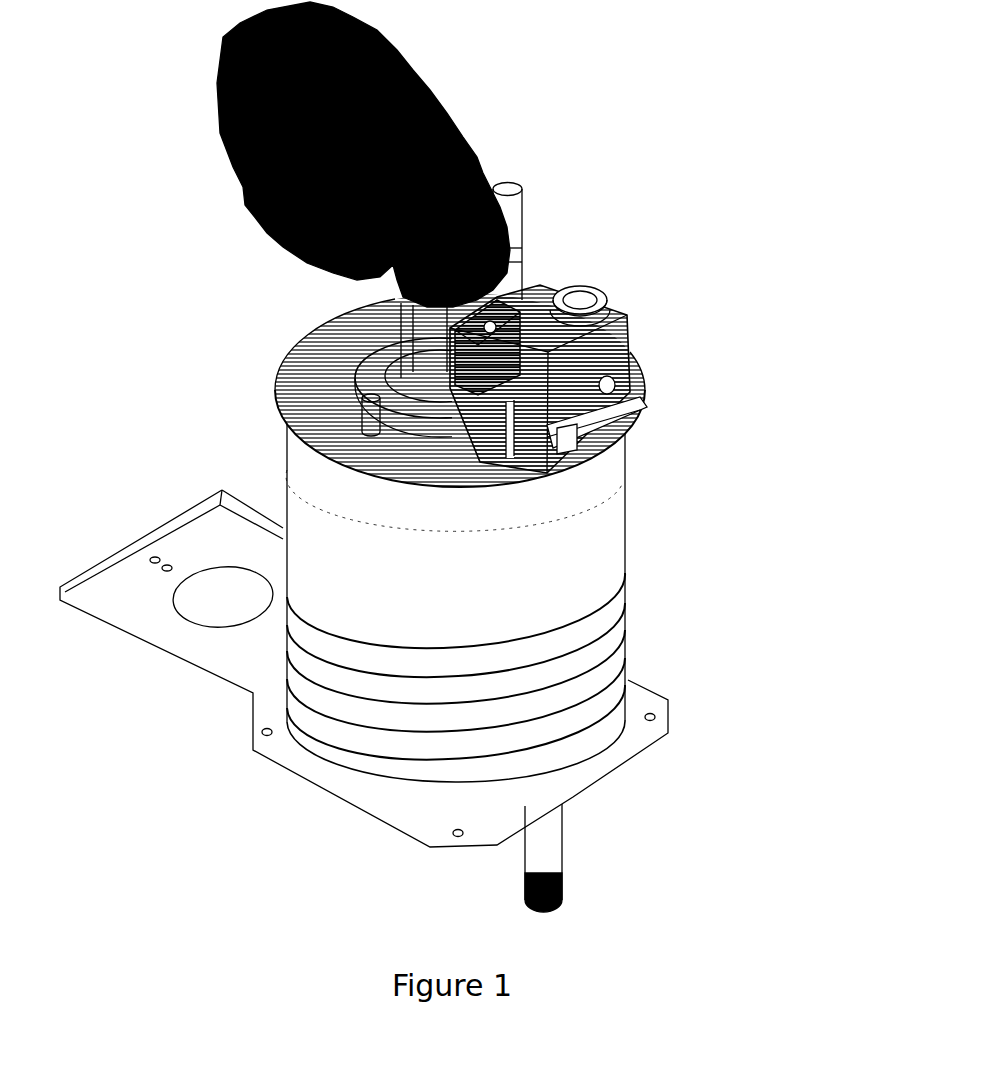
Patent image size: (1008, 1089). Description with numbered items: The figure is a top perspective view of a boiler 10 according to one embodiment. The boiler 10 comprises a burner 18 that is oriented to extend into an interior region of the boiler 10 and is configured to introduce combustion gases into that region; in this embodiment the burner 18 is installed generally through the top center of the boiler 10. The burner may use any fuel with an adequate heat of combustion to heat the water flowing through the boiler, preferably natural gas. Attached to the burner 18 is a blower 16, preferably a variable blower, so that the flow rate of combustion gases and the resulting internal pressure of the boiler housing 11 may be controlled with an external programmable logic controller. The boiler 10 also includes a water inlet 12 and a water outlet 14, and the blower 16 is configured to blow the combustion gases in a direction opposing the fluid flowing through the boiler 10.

The boiler 10 is at (752, 481).
The boiler housing 11 is at (622, 468).
The water inlet 12 is at (560, 837).
The water outlet 14 is at (525, 247).
The blower 16 is at (447, 100).
The burner 18 is at (355, 381).